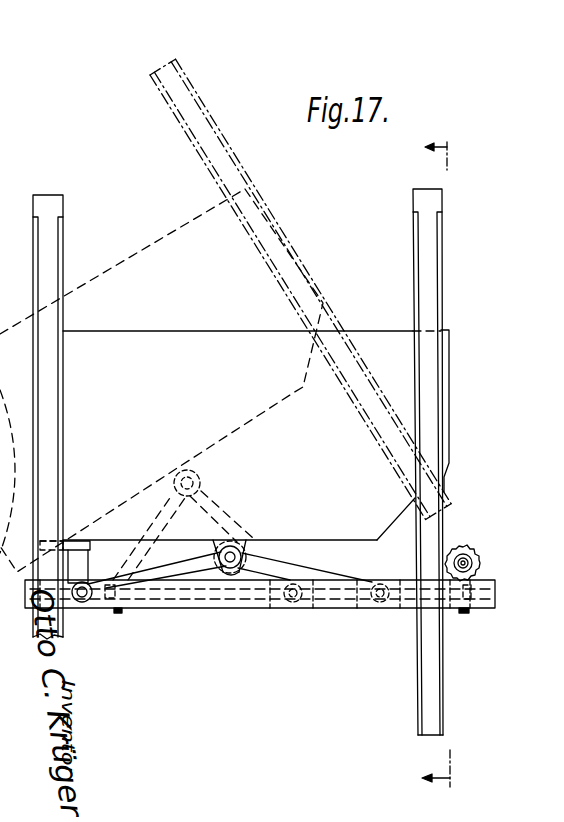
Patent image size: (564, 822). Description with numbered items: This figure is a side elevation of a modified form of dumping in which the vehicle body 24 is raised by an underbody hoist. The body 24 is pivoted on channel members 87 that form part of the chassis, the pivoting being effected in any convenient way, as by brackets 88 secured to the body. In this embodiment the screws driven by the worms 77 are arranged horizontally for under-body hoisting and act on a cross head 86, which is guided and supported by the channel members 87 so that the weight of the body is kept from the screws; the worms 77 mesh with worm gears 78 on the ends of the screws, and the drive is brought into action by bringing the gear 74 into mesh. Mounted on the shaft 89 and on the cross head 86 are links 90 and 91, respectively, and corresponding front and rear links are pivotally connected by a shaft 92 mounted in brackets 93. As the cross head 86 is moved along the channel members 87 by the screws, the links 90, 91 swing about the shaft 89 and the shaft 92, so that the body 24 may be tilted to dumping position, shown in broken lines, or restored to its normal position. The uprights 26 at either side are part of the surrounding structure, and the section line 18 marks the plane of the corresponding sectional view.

The section line 18- 18 is at (447, 467).
The vehicle body 24 is at (224, 380).
The upright post 26 is at (47, 248).
The gear 74 is at (470, 553).
The worm 77 is at (476, 565).
The worm gear 78 is at (464, 613).
The cross head 86 is at (395, 600).
The channel member 87 is at (488, 608).
The bracket 88 is at (76, 562).
The shaft 89 is at (85, 603).
The link 90 is at (177, 574).
The link 91 is at (235, 522).
The shaft 92 is at (220, 548).
The bracket 93 is at (197, 461).